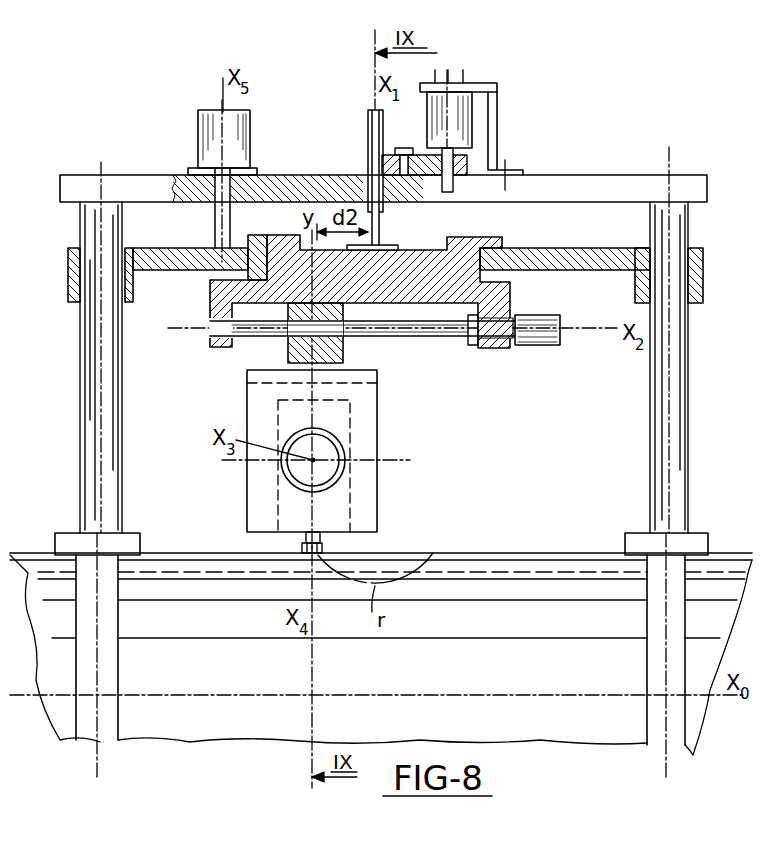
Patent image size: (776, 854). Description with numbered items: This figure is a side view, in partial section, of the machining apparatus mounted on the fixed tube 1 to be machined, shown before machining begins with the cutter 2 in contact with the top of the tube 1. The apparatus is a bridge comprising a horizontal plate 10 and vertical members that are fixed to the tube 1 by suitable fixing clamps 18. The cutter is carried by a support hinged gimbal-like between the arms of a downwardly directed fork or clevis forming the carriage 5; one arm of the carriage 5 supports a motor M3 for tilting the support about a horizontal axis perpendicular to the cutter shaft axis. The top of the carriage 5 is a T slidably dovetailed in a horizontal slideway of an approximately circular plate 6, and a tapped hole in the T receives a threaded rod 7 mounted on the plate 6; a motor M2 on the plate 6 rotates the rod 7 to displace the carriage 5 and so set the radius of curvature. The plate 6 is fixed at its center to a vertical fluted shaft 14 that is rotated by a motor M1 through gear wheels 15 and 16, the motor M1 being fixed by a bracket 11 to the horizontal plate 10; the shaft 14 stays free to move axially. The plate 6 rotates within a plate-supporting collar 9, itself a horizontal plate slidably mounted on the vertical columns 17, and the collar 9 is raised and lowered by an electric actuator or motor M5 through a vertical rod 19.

The fixed tube 1 is at (192, 555).
The cutter 2 is at (302, 548).
The carriage 5 is at (374, 497).
The plate 6 is at (430, 253).
The threaded rod 7 is at (410, 330).
The plate-supporting collar 9 is at (566, 256).
The horizontal plate 10 is at (138, 183).
The bracket 11 is at (497, 113).
The shaft 14 is at (368, 146).
The gear wheel 15 is at (470, 162).
The gear wheel 16 is at (390, 152).
The vertical columns 17 is at (122, 373).
The fixing clamps 18 is at (118, 665).
The rod 19 is at (215, 228).
The motor M1 is at (458, 109).
The motor M2 is at (537, 317).
The motor M3 is at (345, 462).
The motor M5 is at (222, 142).